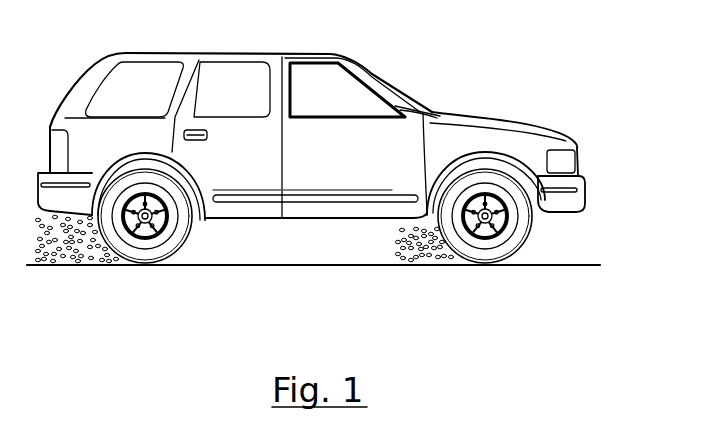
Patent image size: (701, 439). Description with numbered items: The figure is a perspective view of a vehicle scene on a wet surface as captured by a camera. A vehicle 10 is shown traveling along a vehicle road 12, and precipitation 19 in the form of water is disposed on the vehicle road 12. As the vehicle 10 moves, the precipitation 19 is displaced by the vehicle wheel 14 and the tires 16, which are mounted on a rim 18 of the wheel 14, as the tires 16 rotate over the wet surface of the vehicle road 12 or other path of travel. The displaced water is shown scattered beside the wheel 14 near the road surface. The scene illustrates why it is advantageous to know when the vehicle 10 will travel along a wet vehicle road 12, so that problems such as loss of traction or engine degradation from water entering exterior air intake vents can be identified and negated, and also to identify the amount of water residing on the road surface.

The vehicle 10 is at (398, 81).
The vehicle road 12 is at (193, 265).
The vehicle wheel 14 is at (483, 263).
The tire 16 is at (512, 243).
The rim 18 is at (507, 215).
The precipitation 19 is at (427, 260).